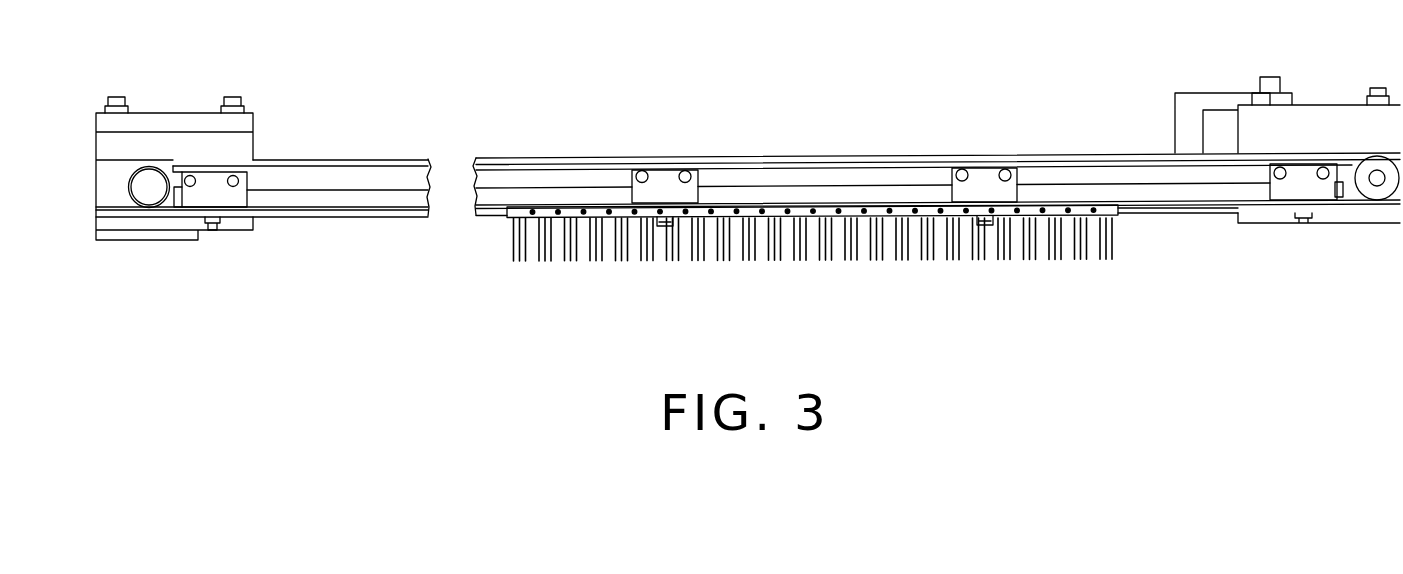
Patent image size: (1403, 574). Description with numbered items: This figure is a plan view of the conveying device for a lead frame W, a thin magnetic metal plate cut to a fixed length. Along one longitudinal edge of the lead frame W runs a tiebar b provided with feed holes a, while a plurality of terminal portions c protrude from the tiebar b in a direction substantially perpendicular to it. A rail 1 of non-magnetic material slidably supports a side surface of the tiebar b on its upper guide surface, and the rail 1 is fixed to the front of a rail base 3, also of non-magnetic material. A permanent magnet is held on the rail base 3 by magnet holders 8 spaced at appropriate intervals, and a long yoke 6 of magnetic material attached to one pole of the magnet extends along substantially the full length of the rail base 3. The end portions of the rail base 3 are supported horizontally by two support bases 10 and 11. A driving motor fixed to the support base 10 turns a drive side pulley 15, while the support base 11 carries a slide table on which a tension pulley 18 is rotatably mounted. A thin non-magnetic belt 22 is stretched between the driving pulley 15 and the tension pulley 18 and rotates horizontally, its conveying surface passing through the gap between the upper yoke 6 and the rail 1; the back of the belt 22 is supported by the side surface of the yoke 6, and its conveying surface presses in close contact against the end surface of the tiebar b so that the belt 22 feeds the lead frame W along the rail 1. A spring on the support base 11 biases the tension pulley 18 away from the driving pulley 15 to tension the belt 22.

The rail 1 is at (355, 218).
The rail base 3 is at (822, 158).
The yoke 6 is at (1073, 185).
The magnet holder 8 is at (667, 173).
The support base 10 is at (187, 115).
The support base 11 is at (1323, 112).
The drive side pulley 15 is at (148, 200).
The tension pulley 18 is at (1373, 197).
The belt 22 is at (383, 162).
The feed holes a is at (737, 215).
The tiebar b is at (597, 213).
The terminal portions c is at (745, 247).
The lead frame W is at (882, 270).